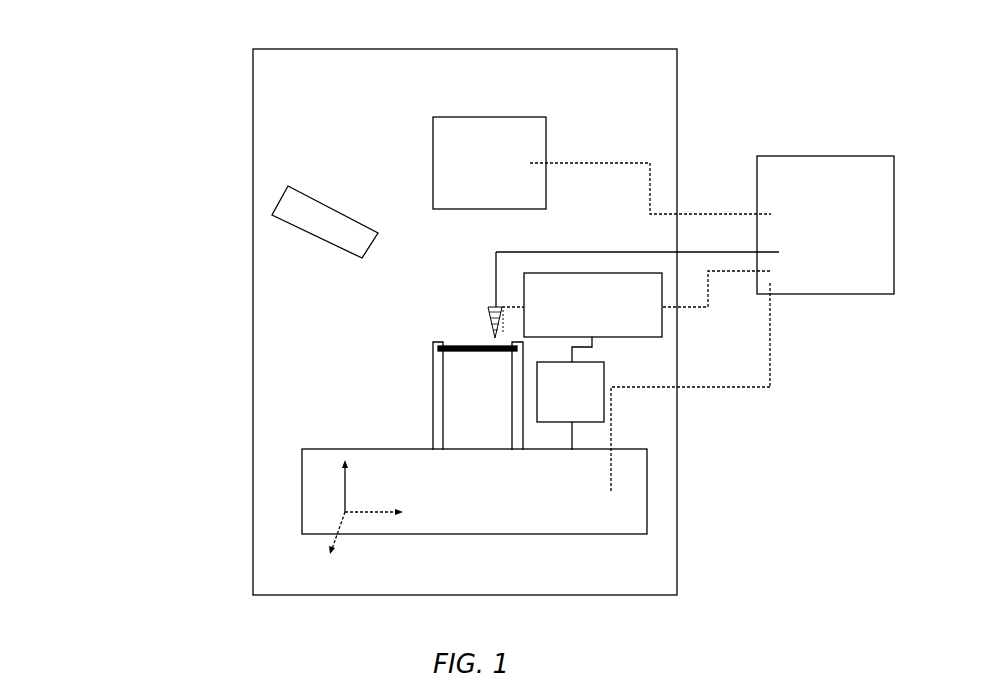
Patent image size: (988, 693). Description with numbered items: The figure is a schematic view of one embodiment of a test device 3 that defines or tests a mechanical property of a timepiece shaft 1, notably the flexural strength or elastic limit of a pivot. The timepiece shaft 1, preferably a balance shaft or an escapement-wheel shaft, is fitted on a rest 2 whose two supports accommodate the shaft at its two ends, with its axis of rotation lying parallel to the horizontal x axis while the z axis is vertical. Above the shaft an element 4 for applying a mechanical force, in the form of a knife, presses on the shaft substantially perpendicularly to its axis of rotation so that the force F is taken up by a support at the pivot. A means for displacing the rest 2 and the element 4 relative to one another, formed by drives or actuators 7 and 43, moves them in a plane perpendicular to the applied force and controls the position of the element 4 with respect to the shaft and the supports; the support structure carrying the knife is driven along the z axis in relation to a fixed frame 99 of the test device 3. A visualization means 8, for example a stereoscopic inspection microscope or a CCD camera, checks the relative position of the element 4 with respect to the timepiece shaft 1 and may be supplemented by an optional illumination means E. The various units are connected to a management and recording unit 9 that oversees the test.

The test device 3 is at (208, 77).
The visualization means 8 is at (470, 157).
The illumination means E is at (303, 227).
The management and recording unit 9 is at (825, 156).
The element for applying a mechanical force 4 is at (488, 323).
The drive or actuator 43 is at (593, 317).
The frame 99 is at (653, 427).
The timepiece shaft 1 is at (440, 350).
The rest 2 is at (437, 396).
The drive or actuator 7 is at (305, 519).